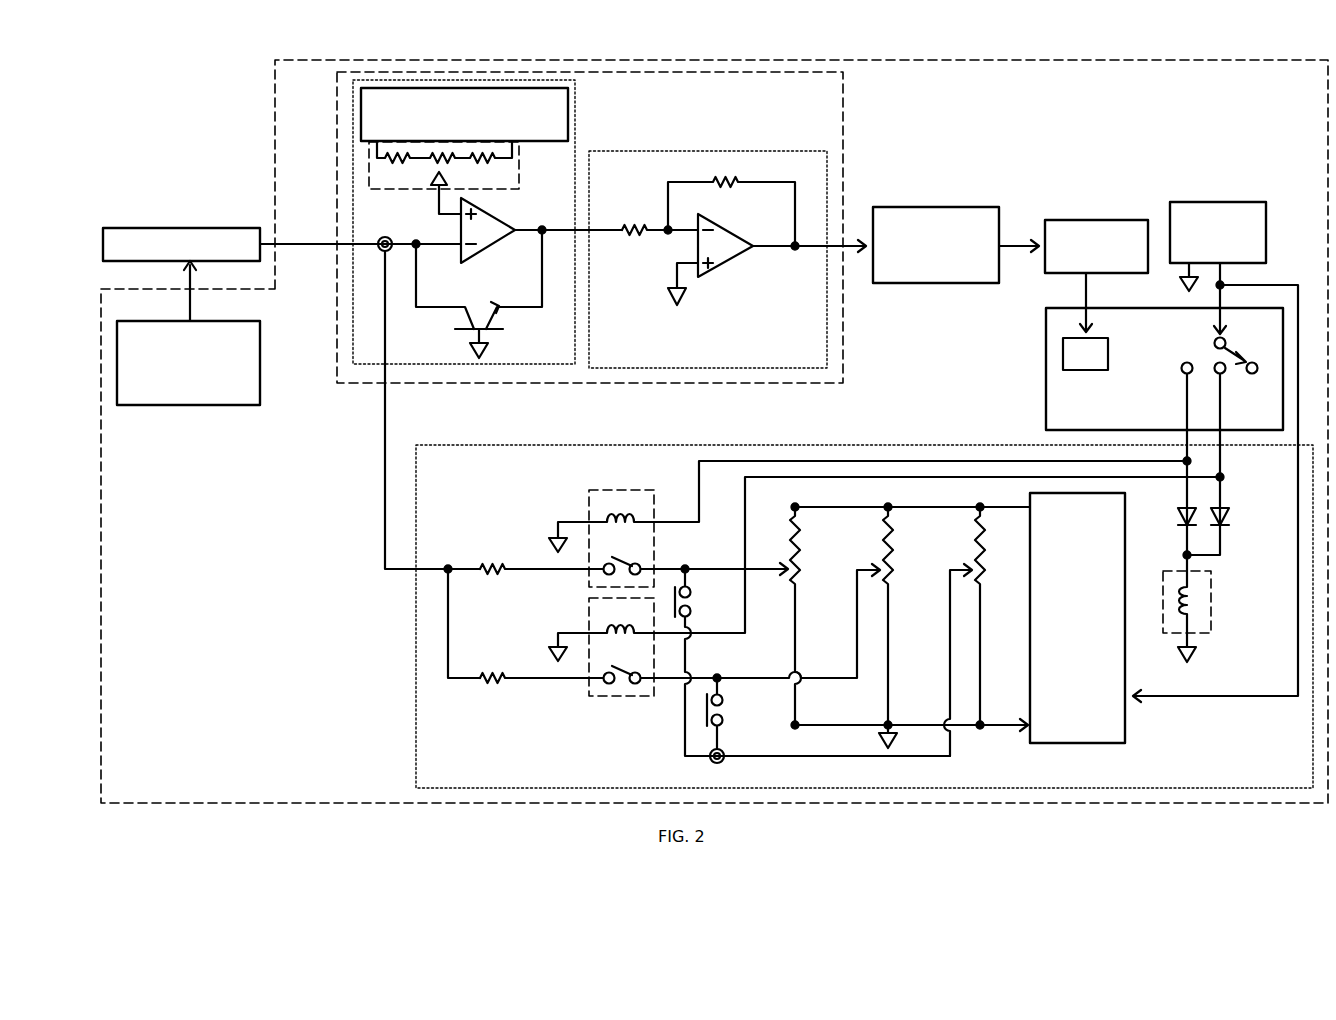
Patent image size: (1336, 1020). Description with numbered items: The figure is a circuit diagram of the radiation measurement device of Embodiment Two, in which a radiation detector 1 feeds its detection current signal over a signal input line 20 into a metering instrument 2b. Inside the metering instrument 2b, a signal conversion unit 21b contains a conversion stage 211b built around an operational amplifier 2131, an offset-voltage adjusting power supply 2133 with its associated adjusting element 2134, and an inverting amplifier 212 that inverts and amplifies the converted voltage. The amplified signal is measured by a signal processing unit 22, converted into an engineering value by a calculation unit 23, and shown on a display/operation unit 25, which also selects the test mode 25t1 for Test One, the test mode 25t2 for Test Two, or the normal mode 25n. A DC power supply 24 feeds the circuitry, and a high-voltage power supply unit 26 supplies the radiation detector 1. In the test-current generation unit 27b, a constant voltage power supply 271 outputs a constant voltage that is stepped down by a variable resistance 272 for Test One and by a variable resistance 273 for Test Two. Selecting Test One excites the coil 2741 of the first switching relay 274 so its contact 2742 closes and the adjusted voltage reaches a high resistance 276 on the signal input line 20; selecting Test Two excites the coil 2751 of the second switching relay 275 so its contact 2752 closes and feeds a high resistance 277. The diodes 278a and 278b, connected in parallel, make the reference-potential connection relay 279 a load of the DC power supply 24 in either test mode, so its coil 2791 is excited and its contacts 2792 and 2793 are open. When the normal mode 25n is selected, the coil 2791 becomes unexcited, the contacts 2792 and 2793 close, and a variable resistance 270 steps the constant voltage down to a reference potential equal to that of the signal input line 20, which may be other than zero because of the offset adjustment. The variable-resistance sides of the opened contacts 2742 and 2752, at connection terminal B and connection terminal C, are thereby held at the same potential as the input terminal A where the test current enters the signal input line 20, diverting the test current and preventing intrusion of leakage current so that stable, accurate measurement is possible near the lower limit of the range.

The radiation detector 1 is at (213, 230).
The metering instrument 2b is at (1235, 60).
The signal input line 20 is at (283, 240).
The input terminal A is at (383, 238).
The signal conversion unit 21b is at (843, 178).
The preamplifier 211b is at (568, 110).
The operational amplifier 2131 is at (502, 252).
The offset-voltage adjusting power supply 2133 is at (568, 150).
The offset-voltage adjusting power supply 2134 is at (464, 153).
The inverting amplifier 212 is at (760, 150).
The signal processing unit 22 is at (943, 206).
The calculation unit 23 is at (1075, 220).
The DC power supply 24 is at (1222, 200).
The display/operation unit 25 is at (1042, 363).
The test mode for Test 1 25t1 is at (1214, 364).
The test mode for Test 2 25t2 is at (1184, 370).
The normal mode 25n is at (1252, 374).
The high-voltage power supply unit 26 is at (218, 407).
The test-current generation unit 27b is at (416, 733).
The second switching relay 275 is at (589, 490).
The coil 2751 is at (626, 512).
The contact 2752 is at (640, 560).
The high resistance 277 is at (493, 562).
The high resistance 276 is at (493, 671).
The first switching relay 274 is at (589, 696).
The coil 2741 is at (616, 632).
The contact 2742 is at (628, 688).
The connection terminal C is at (690, 572).
The contact 2793 is at (691, 613).
The connection terminal B is at (722, 681).
The contact 2792 is at (723, 722).
The variable resistance 273 is at (800, 572).
The variable resistance 272 is at (893, 572).
The variable resistance 270 is at (985, 572).
The constant voltage power supply 271 is at (1125, 722).
The diode 278b is at (1180, 508).
The diode 278a is at (1245, 494).
The reference-potential connection relay 279 is at (1211, 585).
The coil 2791 is at (1195, 612).